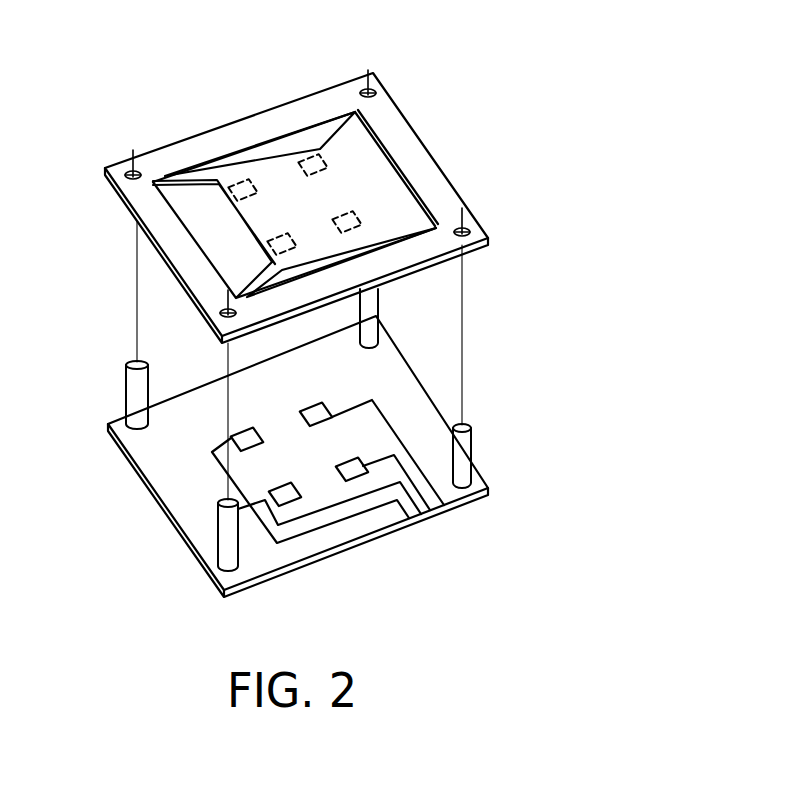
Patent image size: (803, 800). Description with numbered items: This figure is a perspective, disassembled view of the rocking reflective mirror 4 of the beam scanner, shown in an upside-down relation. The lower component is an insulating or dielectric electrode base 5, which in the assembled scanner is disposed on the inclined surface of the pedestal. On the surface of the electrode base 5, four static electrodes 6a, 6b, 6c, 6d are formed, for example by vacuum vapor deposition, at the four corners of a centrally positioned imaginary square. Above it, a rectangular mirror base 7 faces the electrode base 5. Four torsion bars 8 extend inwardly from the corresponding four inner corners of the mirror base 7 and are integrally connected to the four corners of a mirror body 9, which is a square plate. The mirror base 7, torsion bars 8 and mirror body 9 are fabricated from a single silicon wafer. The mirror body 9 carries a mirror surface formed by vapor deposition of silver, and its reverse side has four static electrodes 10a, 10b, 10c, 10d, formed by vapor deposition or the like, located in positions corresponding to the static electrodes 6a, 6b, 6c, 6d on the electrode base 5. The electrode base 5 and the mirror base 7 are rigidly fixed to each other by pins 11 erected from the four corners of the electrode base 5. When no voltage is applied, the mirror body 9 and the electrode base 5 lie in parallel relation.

The rocking reflective mirror 4 is at (297, 313).
The electrode base 5 is at (175, 495).
The static electrode 6a is at (230, 441).
The static electrode 6b is at (293, 498).
The static electrode 6c is at (326, 405).
The static electrode 6d is at (368, 474).
The mirror base 7 is at (167, 238).
The torsion bar 8 is at (334, 124).
The mirror body 9 is at (266, 172).
The static electrode 10a is at (228, 190).
The static electrode 10b is at (270, 250).
The static electrode 10c is at (322, 153).
The static electrode 10d is at (362, 231).
The pin 11 is at (471, 447).